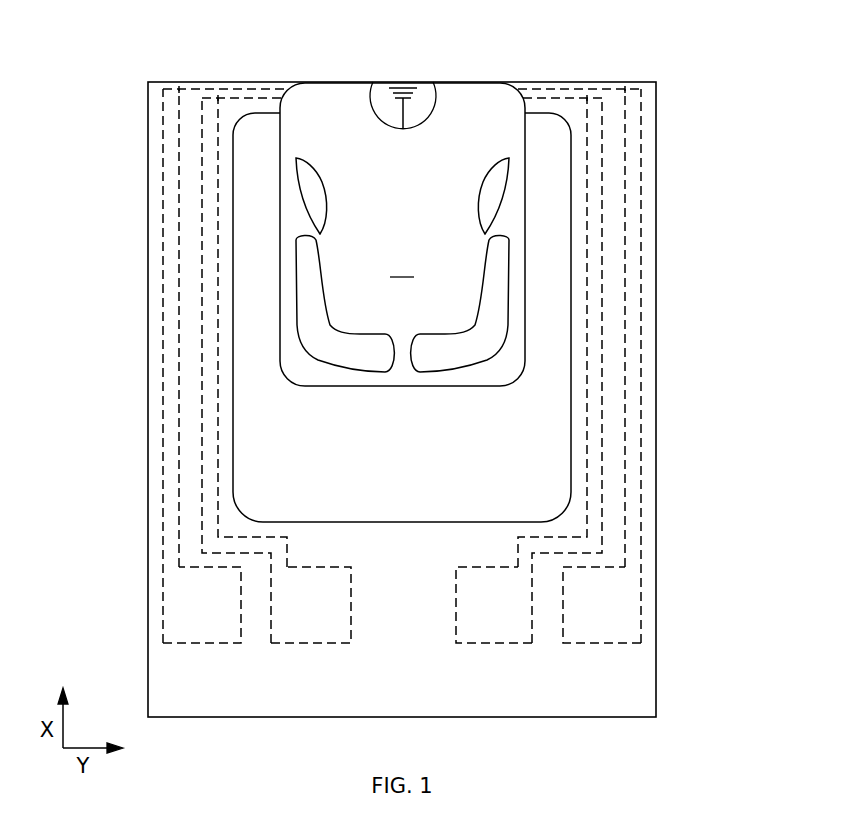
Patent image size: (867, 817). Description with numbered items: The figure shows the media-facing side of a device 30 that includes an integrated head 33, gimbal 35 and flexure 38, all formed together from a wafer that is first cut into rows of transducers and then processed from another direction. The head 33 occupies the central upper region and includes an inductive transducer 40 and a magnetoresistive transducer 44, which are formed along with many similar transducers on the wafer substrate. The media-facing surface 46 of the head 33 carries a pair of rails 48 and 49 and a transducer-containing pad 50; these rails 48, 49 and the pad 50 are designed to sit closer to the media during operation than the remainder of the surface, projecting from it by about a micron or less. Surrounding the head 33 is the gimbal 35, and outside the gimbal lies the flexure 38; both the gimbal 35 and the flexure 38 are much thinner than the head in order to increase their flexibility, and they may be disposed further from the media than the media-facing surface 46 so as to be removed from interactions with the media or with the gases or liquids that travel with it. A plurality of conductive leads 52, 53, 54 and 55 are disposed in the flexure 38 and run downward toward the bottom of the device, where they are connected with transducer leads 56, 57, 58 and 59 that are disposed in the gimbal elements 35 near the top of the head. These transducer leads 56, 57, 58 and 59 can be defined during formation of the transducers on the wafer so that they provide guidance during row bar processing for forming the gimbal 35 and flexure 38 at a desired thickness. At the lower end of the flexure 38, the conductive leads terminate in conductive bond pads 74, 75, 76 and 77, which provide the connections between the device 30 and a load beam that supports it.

The device 30 is at (710, 67).
The head 33 is at (467, 82).
The gimbal 35 is at (253, 117).
The flexure 38 is at (148, 385).
The inductive transducer 40 is at (388, 96).
The magnetoresistive (MR) transducer 44 is at (404, 128).
The media-facing surface 46 is at (402, 266).
The rail 48 is at (325, 205).
The rail 49 is at (482, 198).
The transducer-containing pad 50 is at (432, 112).
The conductive lead 52 is at (166, 249).
The conductive lead 53 is at (210, 493).
The conductive lead 54 is at (587, 475).
The conductive lead 55 is at (643, 366).
The transducer lead 56 is at (194, 84).
The transducer lead 57 is at (264, 92).
The transducer lead 58 is at (608, 84).
The transducer lead 59 is at (535, 92).
The conductive bond pad 74 is at (197, 646).
The conductive bond pad 75 is at (308, 646).
The conductive bond pad 76 is at (494, 646).
The conductive bond pad 77 is at (607, 646).